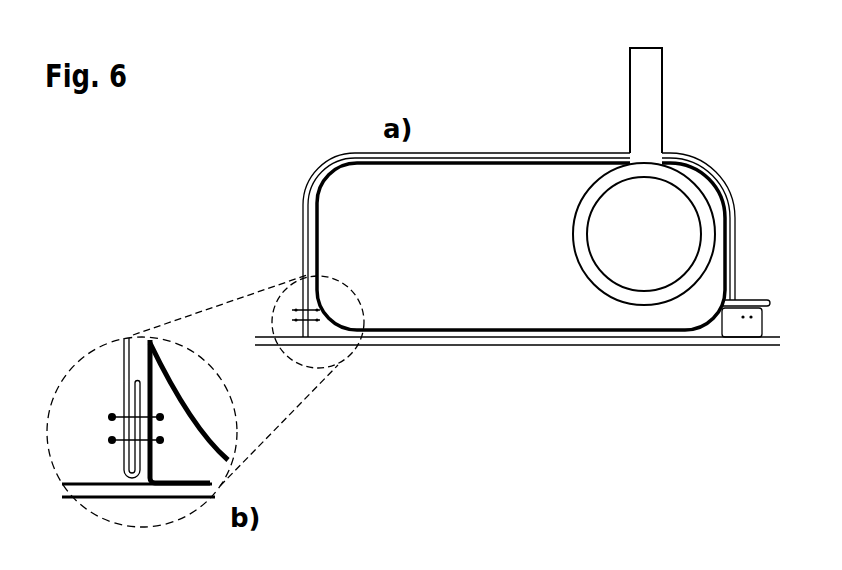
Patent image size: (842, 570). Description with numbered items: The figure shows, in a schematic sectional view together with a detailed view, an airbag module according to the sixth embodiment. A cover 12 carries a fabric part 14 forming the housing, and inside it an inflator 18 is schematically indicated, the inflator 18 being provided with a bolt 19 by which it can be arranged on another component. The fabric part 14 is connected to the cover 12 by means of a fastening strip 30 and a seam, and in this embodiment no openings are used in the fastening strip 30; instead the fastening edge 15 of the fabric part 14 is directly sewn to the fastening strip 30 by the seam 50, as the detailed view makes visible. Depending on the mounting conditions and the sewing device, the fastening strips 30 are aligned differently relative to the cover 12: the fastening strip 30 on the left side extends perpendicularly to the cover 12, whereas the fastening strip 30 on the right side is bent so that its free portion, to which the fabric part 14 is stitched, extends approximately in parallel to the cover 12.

The cover 12 is at (487, 346).
The fabric part 14 is at (738, 242).
The fastening edge 15 is at (123, 463).
The inflator 18 is at (683, 187).
The bolt 19 is at (648, 82).
The fastening strip 30 is at (762, 318).
The seam 50 is at (106, 440).